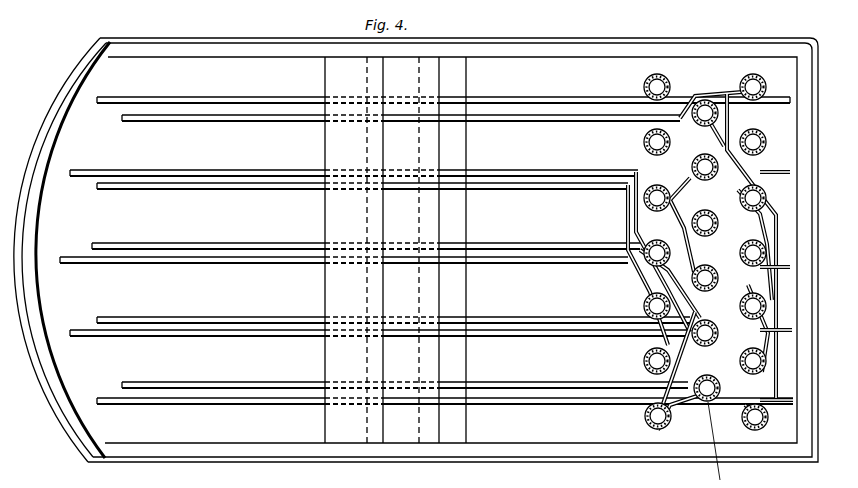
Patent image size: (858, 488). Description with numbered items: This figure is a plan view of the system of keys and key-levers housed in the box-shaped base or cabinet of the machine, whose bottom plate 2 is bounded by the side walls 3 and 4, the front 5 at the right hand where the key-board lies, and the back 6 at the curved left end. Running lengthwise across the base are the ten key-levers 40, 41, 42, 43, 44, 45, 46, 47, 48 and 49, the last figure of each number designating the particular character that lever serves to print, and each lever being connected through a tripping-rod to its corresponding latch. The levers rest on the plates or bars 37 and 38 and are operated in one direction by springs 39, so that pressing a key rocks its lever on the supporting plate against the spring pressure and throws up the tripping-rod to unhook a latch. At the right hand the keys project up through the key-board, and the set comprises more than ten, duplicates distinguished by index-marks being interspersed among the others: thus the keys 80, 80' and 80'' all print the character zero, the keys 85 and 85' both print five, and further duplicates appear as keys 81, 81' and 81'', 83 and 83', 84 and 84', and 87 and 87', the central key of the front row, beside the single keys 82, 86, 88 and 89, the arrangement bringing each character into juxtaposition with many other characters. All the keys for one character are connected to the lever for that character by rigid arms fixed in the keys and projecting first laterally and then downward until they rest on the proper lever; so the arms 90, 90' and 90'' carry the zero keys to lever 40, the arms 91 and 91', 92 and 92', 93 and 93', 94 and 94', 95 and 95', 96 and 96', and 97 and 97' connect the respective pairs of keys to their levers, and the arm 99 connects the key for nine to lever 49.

The bottom plate 2 is at (520, 422).
The side wall 3 is at (590, 450).
The side wall 4 is at (578, 50).
The front 5 is at (800, 415).
The back 6 is at (40, 312).
The plate or bar 37 is at (455, 426).
The plate or bar 38 is at (430, 362).
The spring 39 is at (333, 413).
The key-lever 40 is at (220, 264).
The key-lever 41 is at (215, 173).
The key-lever 42 is at (257, 320).
The key-lever 43 is at (240, 247).
The key-lever 44 is at (222, 100).
The key-lever 45 is at (268, 335).
The key-lever 46 is at (228, 190).
The key-lever 47 is at (233, 405).
The key-lever 48 is at (196, 386).
The key-lever 49 is at (270, 117).
The key 80 is at (625, 198).
The key 80' is at (745, 418).
The key 80'' is at (795, 138).
The key 81 is at (709, 69).
The key 81' is at (661, 258).
The key 81'' is at (795, 310).
The key 82 is at (705, 214).
The key 83 is at (616, 142).
The key 83' is at (622, 361).
The key 84 is at (651, 57).
The key 84' is at (703, 286).
The key 85 is at (714, 346).
The key 85' is at (793, 194).
The key 86 is at (697, 160).
The key 87 is at (770, 446).
The key 87' is at (793, 235).
The key 88 is at (688, 401).
The key 89 is at (763, 80).
The rigid arm 90 is at (625, 252).
The rigid arm 90' is at (793, 245).
The rigid arm 90'' is at (810, 157).
The rigid arm 91 is at (736, 248).
The rigid arm 91' is at (628, 265).
The rigid arm 92 is at (631, 248).
The rigid arm 92' is at (686, 358).
The rigid arm 93 is at (620, 158).
The rigid arm 93' is at (626, 347).
The rigid arm 94 is at (705, 65).
The rigid arm 94' is at (758, 117).
The rigid arm 95 is at (724, 313).
The rigid arm 95' is at (763, 225).
The rigid arm 96 is at (694, 164).
The rigid arm 96' is at (612, 275).
The rigid arm 97 is at (711, 405).
The rigid arm 97' is at (798, 328).
The rigid arm 99 is at (727, 93).